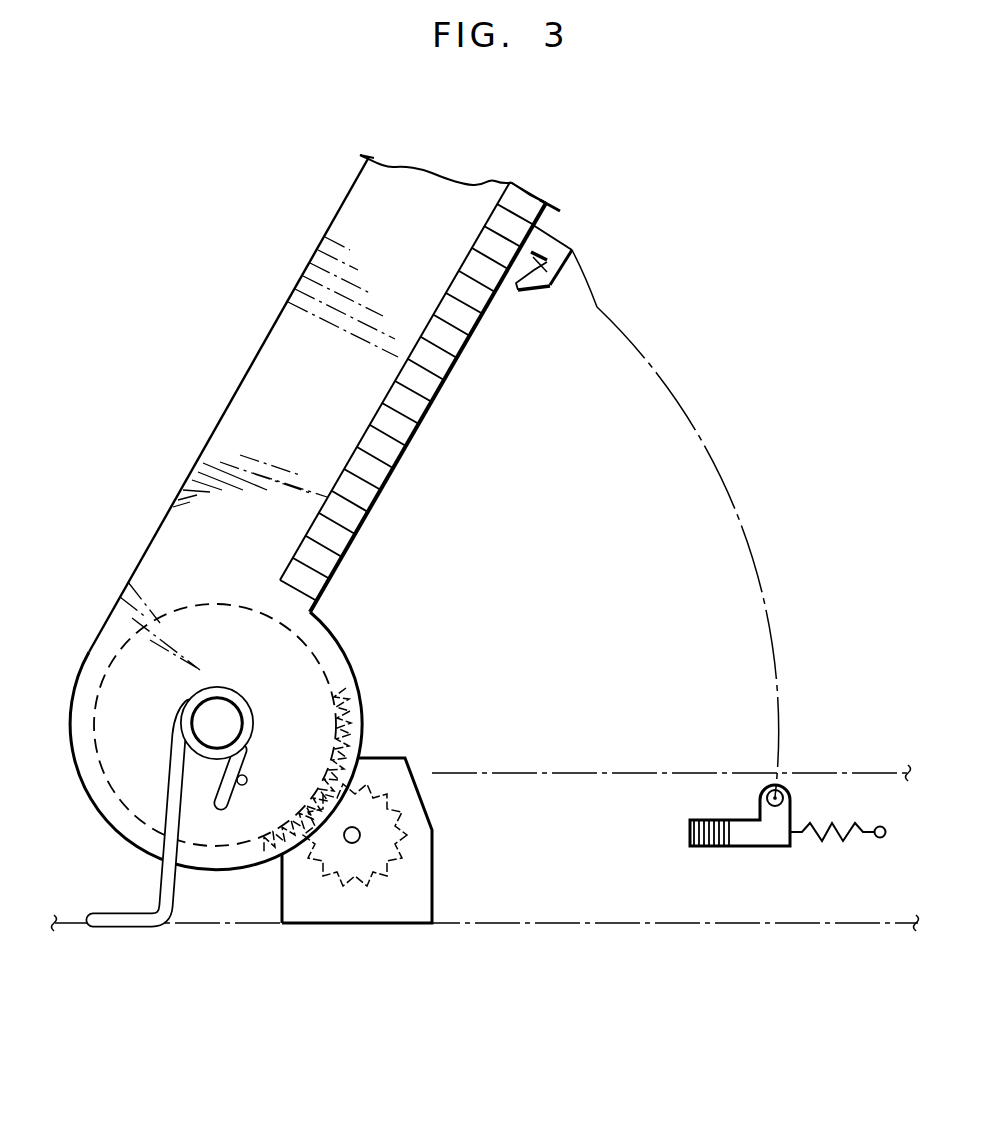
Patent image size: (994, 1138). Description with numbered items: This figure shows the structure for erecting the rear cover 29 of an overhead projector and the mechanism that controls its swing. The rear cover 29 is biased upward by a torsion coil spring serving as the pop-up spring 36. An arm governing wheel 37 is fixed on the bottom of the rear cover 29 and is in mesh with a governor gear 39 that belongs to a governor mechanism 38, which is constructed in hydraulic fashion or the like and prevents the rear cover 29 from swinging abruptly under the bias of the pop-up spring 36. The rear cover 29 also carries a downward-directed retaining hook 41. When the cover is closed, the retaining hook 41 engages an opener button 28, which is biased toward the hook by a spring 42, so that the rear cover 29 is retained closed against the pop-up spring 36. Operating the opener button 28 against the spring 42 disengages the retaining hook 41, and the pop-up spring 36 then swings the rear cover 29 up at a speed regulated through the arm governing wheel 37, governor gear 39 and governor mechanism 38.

The rear cover 29 is at (273, 352).
The retaining hook 41 is at (565, 253).
The arm governing wheel 37 is at (340, 705).
The pop-up spring 36 is at (170, 893).
The governor gear 39 is at (397, 835).
The governor mechanism 38 is at (418, 893).
The opener button 28 is at (772, 838).
The spring 42 is at (847, 842).